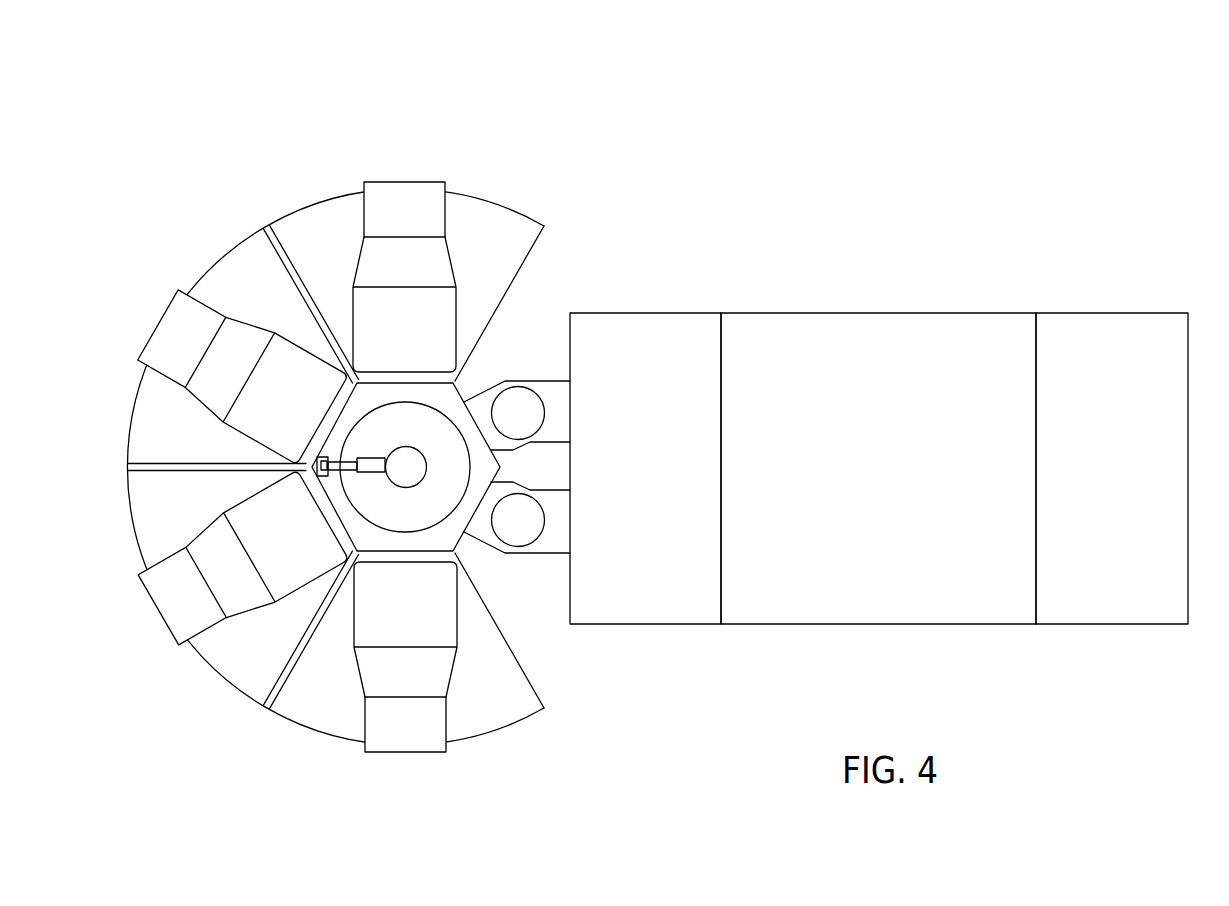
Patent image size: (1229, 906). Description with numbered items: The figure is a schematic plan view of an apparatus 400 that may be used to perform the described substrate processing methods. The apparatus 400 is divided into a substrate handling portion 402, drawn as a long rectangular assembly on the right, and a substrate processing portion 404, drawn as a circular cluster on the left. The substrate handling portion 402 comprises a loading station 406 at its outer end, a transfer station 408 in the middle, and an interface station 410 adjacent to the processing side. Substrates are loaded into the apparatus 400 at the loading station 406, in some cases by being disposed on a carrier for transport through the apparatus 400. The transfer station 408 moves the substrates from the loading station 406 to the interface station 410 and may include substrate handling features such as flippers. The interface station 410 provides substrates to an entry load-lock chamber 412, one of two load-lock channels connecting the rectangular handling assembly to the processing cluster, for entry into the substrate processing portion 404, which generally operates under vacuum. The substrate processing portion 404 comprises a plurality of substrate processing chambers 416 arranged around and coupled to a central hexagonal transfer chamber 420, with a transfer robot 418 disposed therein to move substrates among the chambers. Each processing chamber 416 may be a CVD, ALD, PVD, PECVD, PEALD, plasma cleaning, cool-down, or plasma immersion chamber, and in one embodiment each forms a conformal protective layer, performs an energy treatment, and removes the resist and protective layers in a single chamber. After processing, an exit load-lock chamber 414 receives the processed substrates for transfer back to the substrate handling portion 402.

The apparatus 400 is at (257, 146).
The substrate handling portion 402 is at (879, 421).
The substrate processing portion 404 is at (211, 708).
The loading station 406 is at (1138, 474).
The transfer station 408 is at (899, 474).
The interface station 410 is at (675, 474).
The entry load-lock chamber 412 is at (552, 381).
The exit load-lock chamber 414 is at (457, 533).
The substrate processing chamber 416 is at (226, 253).
The transfer robot 418 is at (368, 459).
The transfer chamber 420 is at (458, 388).